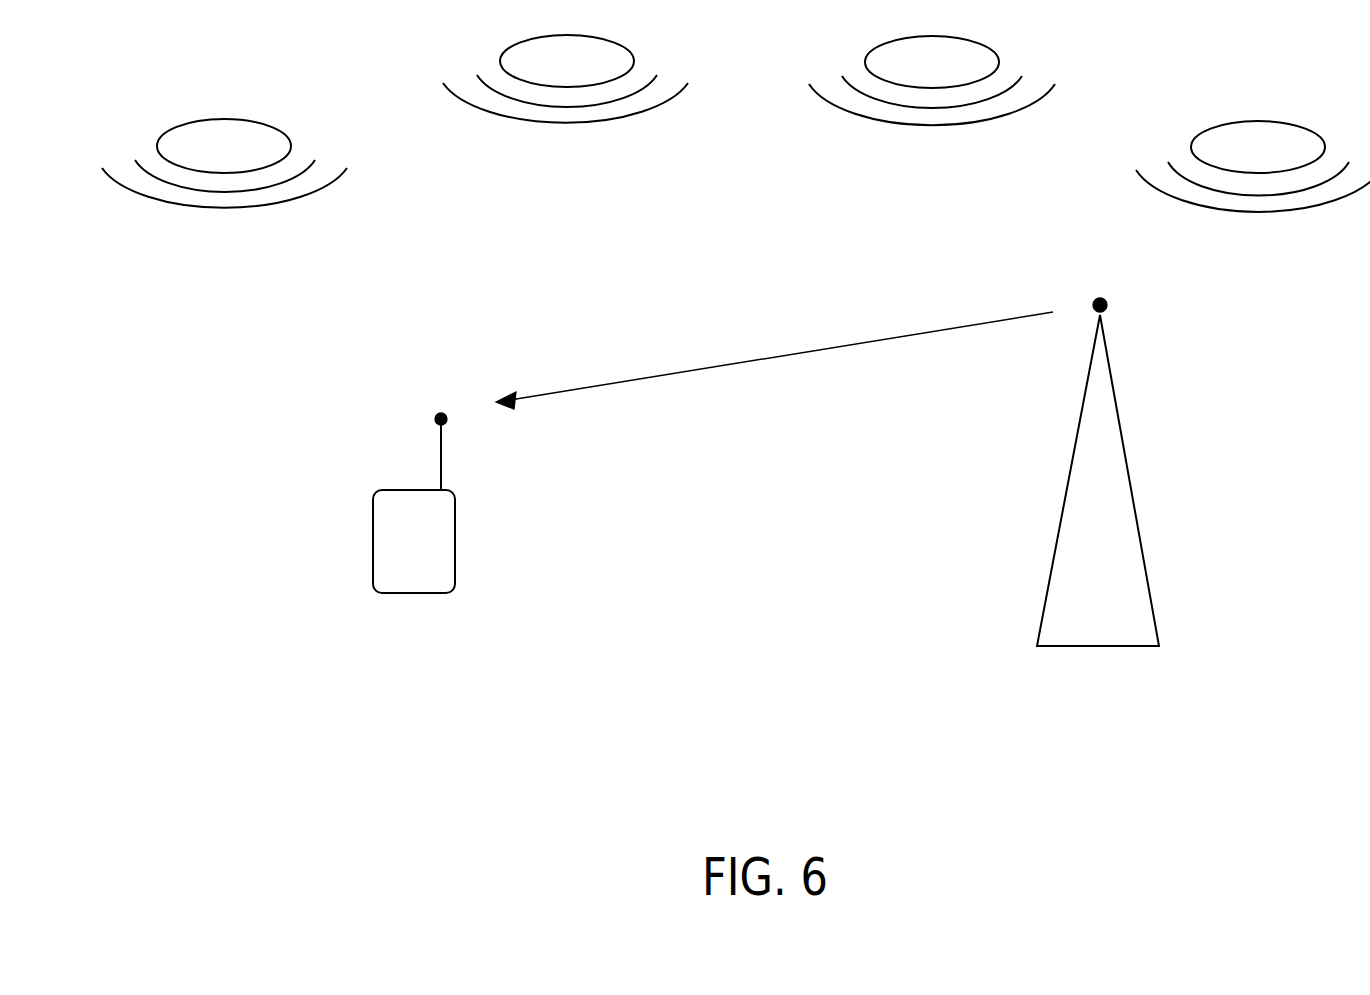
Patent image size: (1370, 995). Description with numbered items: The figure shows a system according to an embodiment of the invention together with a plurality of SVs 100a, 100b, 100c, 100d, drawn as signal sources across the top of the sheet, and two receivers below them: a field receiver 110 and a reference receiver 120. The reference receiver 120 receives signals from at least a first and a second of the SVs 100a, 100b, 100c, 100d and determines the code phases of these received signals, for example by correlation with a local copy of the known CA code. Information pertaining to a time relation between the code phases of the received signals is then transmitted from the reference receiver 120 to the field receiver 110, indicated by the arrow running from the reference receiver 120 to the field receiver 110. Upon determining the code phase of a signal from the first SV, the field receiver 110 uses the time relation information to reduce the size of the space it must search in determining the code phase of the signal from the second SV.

The SV 100a is at (252, 159).
The SV 100b is at (595, 74).
The SV 100c is at (957, 74).
The SV 100d is at (1287, 160).
The field receiver 110 is at (439, 528).
The reference receiver 120 is at (1078, 557).